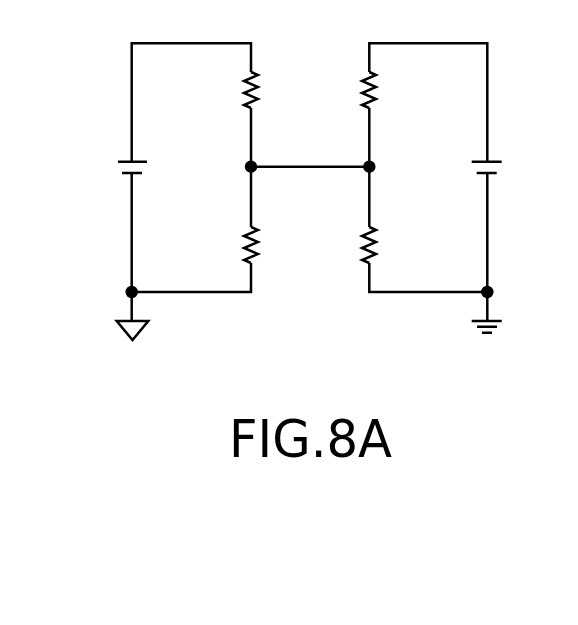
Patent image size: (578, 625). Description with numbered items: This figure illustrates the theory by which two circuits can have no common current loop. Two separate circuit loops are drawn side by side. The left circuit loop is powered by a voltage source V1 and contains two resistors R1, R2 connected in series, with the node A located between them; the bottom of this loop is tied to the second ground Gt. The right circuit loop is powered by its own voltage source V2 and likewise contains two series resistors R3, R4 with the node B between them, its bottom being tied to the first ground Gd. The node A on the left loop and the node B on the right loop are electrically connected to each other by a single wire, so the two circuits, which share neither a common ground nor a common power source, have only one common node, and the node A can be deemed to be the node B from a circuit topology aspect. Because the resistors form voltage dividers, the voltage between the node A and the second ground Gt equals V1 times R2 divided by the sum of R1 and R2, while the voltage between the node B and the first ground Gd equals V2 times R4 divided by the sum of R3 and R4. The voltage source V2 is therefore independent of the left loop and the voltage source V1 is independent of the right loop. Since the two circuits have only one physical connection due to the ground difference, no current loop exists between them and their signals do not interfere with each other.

The resistor R1 is at (269, 90).
The resistor R2 is at (269, 245).
The resistor R3 is at (350, 90).
The resistor R4 is at (350, 245).
The voltage source V1 is at (116, 166).
The voltage source V2 is at (505, 166).
The node A is at (262, 154).
The node B is at (358, 154).
The second ground Gt is at (149, 317).
The first ground Gd is at (506, 317).